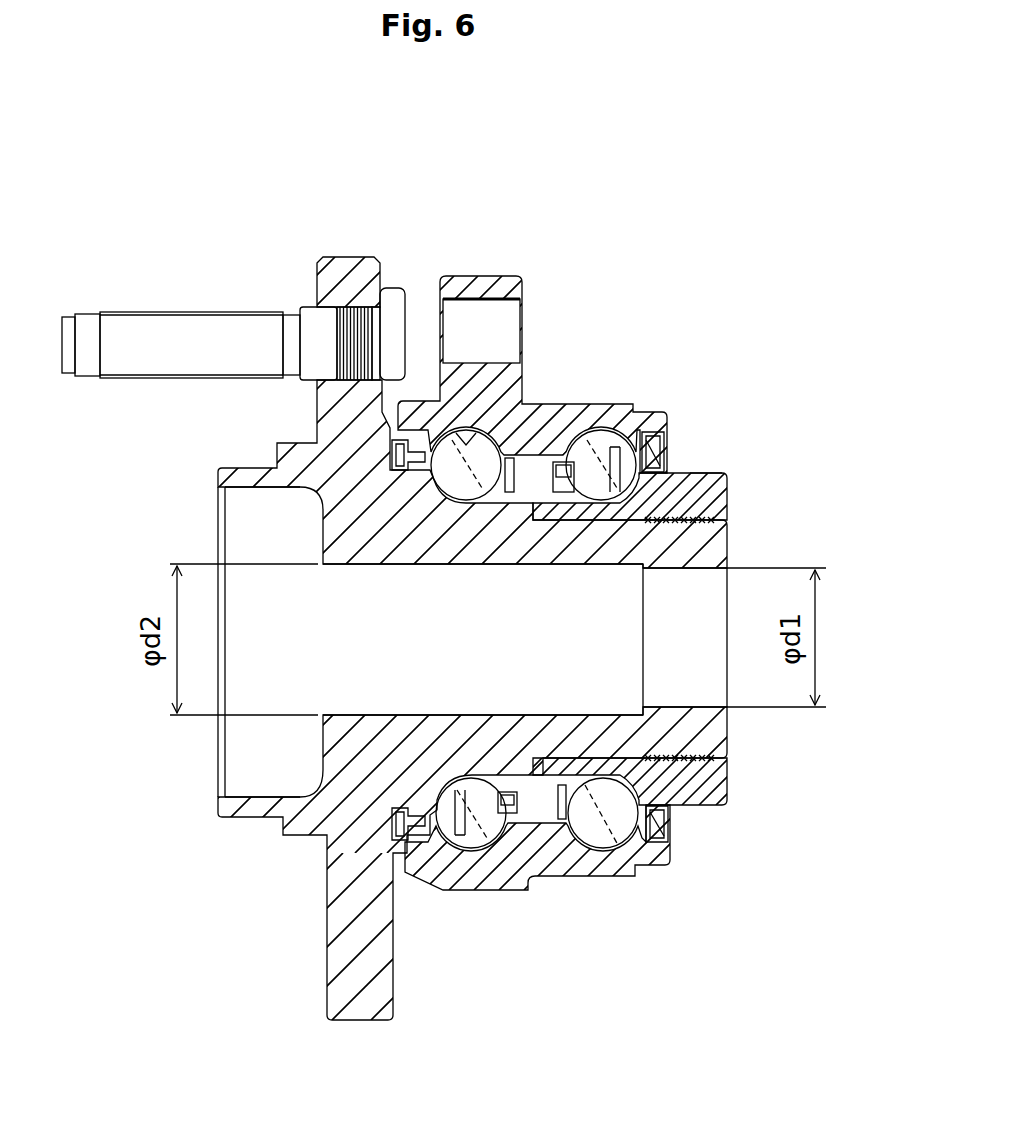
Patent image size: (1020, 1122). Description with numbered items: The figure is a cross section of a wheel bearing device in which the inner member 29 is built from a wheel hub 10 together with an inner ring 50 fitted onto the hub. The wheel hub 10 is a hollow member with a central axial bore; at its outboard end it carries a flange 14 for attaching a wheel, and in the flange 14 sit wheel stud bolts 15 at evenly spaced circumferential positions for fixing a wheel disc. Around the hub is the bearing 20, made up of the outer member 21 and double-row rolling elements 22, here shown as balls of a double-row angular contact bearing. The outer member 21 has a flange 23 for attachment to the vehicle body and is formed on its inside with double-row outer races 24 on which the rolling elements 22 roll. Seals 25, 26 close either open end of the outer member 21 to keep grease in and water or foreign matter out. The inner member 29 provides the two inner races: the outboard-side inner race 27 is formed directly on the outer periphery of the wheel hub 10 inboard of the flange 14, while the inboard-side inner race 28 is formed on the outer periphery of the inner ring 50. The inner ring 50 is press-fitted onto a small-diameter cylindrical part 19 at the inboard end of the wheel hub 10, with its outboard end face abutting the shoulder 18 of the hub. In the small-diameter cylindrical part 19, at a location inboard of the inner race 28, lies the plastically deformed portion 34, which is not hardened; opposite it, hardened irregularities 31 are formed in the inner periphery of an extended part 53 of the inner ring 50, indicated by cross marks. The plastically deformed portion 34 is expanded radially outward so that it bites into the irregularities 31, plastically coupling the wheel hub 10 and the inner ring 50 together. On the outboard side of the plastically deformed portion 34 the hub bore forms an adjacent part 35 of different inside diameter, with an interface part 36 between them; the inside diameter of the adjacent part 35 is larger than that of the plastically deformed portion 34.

The wheel hub 10 is at (470, 700).
The flange 14 is at (344, 262).
The wheel stud bolt 15 is at (243, 288).
The shoulder 18 is at (543, 823).
The small-diameter cylindrical part 19 is at (632, 570).
The bearing 20 is at (535, 577).
The outer member 21 is at (535, 333).
The double-row rolling elements 22 is at (456, 845).
The flange 23 is at (490, 277).
The double-row outer races 24 is at (464, 431).
The seal 25 is at (390, 455).
The seal 26 is at (683, 446).
The outboard-side inner race 27 is at (488, 838).
The inboard-side inner race 28 is at (650, 842).
The inner member 29 is at (214, 826).
The hardened irregularities 31 is at (690, 706).
The plastically deformed portion 34 is at (690, 569).
The adjacent part 35 is at (578, 566).
The interface part 36 is at (640, 712).
The inner ring 50 is at (638, 600).
The extended part 53 is at (692, 474).